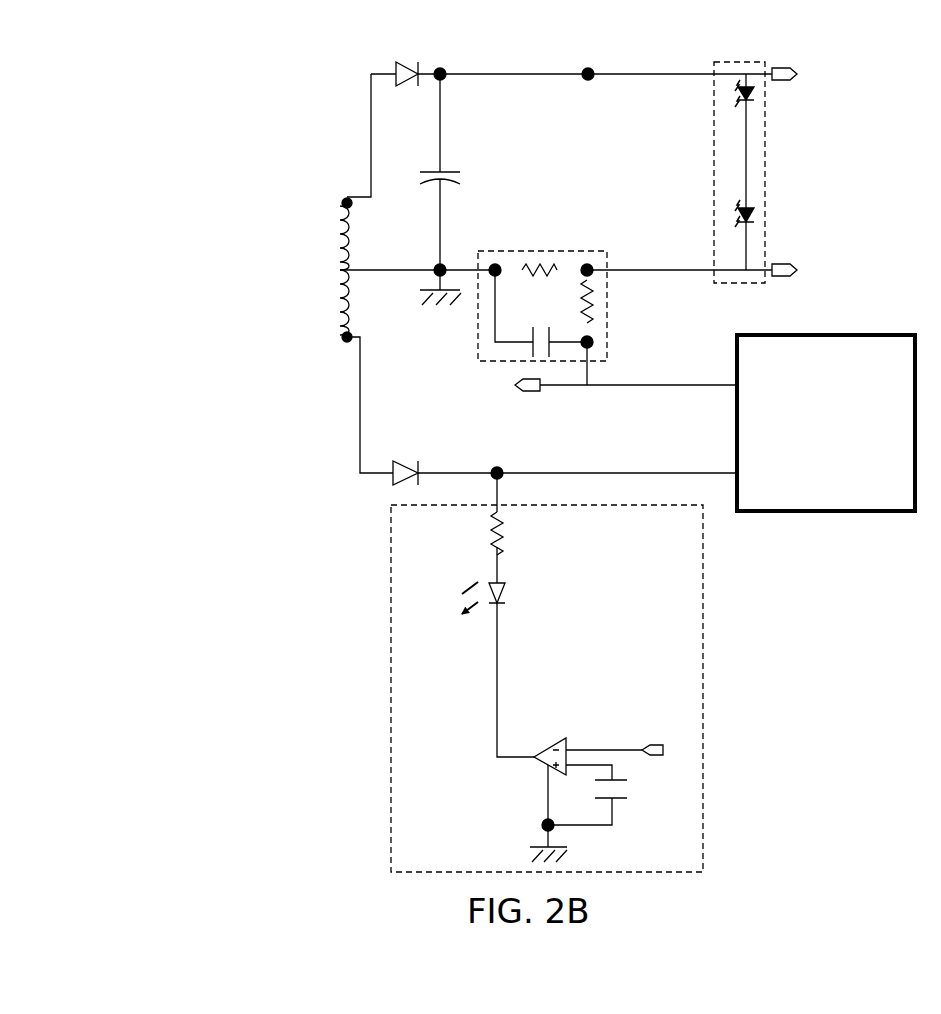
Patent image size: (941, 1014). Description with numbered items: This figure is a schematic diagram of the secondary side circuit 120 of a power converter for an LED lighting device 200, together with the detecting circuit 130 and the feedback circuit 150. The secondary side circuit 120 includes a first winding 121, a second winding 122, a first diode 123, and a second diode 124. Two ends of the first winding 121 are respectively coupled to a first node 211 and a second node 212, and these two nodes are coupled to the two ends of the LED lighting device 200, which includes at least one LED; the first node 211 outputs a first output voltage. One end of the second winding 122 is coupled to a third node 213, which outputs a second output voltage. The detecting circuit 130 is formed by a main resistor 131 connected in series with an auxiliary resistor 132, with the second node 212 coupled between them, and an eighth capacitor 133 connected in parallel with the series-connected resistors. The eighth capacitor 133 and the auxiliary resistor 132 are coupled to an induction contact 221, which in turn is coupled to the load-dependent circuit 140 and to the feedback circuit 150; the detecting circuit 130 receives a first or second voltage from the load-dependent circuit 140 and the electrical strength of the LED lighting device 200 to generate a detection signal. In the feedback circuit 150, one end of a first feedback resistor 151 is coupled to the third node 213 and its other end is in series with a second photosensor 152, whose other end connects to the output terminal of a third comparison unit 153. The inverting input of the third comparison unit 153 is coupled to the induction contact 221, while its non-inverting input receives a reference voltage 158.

The secondary side circuit 120 is at (205, 783).
The first winding 121 is at (340, 215).
The second winding 122 is at (340, 318).
The first diode 123 is at (397, 62).
The second diode 124 is at (395, 485).
The detecting circuit 130 is at (534, 295).
The main resistor 131 is at (522, 268).
The auxiliary resistor 132 is at (592, 302).
The eighth capacitor 133 is at (532, 355).
The load-dependent circuit 140 is at (826, 423).
The feedback circuit 150 is at (589, 672).
The first feedback resistor 151 is at (493, 530).
The second photosensor 152 is at (500, 585).
The third comparison unit 153 is at (565, 740).
The reference voltage 158 is at (620, 798).
The LED lighting device 200 is at (766, 140).
The first node 211 is at (590, 72).
The second node 212 is at (590, 268).
The third node 213 is at (500, 470).
The induction contact 221 is at (520, 391).